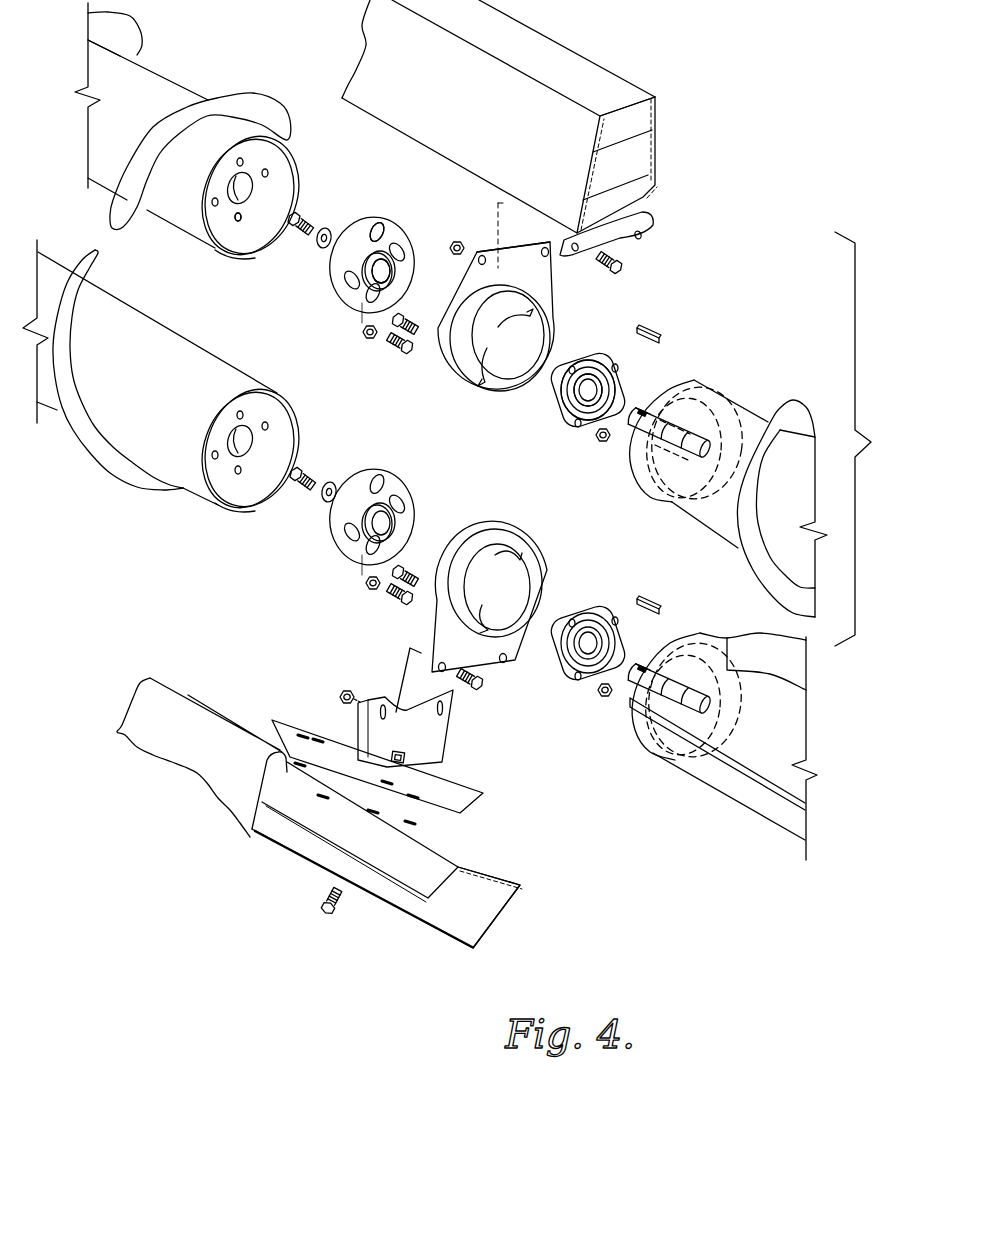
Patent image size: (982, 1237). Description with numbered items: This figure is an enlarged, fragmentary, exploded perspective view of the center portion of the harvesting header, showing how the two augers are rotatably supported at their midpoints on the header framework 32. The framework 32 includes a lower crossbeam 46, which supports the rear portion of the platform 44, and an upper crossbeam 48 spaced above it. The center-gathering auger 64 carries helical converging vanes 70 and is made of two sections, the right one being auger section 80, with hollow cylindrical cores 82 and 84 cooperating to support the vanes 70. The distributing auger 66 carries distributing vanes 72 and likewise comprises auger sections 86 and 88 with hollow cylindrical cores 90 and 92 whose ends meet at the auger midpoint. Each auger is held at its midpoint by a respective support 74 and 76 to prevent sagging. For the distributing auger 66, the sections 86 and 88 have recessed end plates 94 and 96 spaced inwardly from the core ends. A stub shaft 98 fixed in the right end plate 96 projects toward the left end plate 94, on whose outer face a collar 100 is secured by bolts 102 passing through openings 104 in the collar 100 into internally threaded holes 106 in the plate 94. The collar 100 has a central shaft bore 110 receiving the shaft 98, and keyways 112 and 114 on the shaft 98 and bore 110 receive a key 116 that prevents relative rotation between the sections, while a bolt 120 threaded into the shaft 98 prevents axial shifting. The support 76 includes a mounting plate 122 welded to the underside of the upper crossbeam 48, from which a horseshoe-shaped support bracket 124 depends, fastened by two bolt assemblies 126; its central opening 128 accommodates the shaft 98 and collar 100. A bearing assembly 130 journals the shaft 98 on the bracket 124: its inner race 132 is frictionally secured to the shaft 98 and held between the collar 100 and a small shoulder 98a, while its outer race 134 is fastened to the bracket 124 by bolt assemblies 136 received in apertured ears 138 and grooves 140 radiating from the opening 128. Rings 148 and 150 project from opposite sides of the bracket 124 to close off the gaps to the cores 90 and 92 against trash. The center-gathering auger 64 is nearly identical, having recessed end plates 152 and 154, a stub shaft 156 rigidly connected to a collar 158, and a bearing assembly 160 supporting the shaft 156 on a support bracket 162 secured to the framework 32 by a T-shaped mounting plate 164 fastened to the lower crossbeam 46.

The header framework 32 is at (588, 40).
The platform 44 is at (190, 757).
The lower crossbeam 46 is at (483, 903).
The upper crossbeam 48 is at (643, 137).
The center-gathering auger 64 is at (183, 495).
The distributing auger 66 is at (168, 58).
The converging vanes 70 is at (107, 453).
The distributing vanes 72 is at (247, 103).
The support 74 is at (495, 680).
The support 76 is at (562, 282).
The auger section 80 is at (722, 790).
The hollow cylindrical core 82 is at (248, 505).
The hollow cylindrical core 84 is at (778, 812).
The auger section 86 is at (108, 134).
The auger section 88 is at (772, 413).
The hollow cylindrical core 90 is at (253, 250).
The hollow cylindrical core 92 is at (727, 528).
The recessed end plate 94 is at (270, 153).
The recessed end plate 96 is at (710, 390).
The stub shaft 98 is at (630, 420).
The shoulder 98a is at (700, 387).
The collar 100 is at (335, 285).
The bolts 102 is at (390, 346).
The openings 104 is at (393, 247).
The internally threaded holes 106 is at (240, 217).
The central shaft bore 110 is at (385, 275).
The keyway 112 is at (640, 403).
The keyway 114 is at (463, 243).
The key 116 is at (663, 345).
The bolt 120 is at (302, 216).
The mounting plate 122 is at (640, 223).
The support bracket 124 is at (450, 397).
The bolt assemblies 126 is at (620, 265).
The central opening 128 is at (520, 323).
The bearing assembly 130 is at (540, 408).
The inner race 132 is at (603, 390).
The outer race 134 is at (590, 357).
The bolt assemblies 136 is at (423, 340).
The apertured ears 138 is at (570, 443).
The grooves 140 is at (507, 340).
The ring 148 is at (445, 313).
The ring 150 is at (497, 380).
The recessed end plate 152 is at (270, 413).
The recessed end plate 154 is at (650, 743).
The stub shaft 156 is at (630, 690).
The collar 158 is at (403, 477).
The bearing assembly 160 is at (586, 580).
The support bracket 162 is at (513, 515).
The T-shaped mounting plate 164 is at (453, 790).